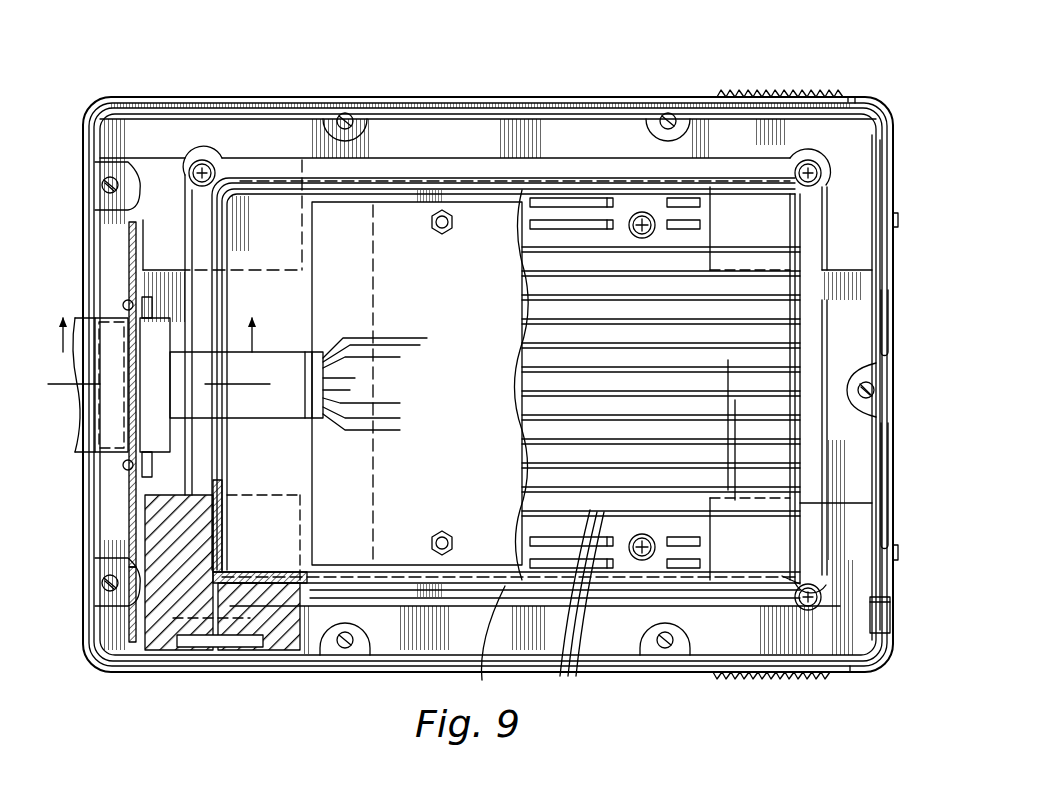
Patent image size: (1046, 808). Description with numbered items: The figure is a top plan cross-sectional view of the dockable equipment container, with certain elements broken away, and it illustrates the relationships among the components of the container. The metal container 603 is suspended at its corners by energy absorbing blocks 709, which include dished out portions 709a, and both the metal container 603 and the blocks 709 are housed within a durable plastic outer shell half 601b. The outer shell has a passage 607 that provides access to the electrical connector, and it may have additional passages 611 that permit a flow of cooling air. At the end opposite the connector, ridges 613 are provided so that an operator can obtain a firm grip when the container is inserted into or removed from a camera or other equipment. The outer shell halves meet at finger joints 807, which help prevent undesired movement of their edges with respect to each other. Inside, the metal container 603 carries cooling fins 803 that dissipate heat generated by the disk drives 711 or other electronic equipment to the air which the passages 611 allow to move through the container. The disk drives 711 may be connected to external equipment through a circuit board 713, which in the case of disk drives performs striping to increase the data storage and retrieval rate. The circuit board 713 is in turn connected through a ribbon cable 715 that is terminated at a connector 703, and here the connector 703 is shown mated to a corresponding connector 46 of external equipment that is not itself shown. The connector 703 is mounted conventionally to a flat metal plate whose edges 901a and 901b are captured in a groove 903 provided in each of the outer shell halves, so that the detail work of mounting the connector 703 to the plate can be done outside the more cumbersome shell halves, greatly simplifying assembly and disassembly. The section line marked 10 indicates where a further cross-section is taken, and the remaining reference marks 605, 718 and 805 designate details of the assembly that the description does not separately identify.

The section line 10- 10 is at (159, 336).
The connector 46 is at (82, 447).
The outer shell half 601b is at (314, 98).
The metal container 603 is at (434, 170).
The screw boss 605 is at (670, 113).
The passage 607 is at (86, 240).
The passage 611 is at (893, 152).
The ridges 613 is at (772, 92).
The connector 703 is at (158, 428).
The energy absorbing blocks 709 is at (246, 122).
The dished out portions 709a is at (238, 628).
The disk drives 711 is at (362, 585).
The circuit board 713 is at (352, 205).
The ribbon cable 715 is at (286, 402).
The screw 718 is at (642, 212).
The cooling fins 803 is at (576, 604).
The wire 805 is at (497, 642).
The finger joints 807 is at (877, 80).
The edge of metal plate 901a is at (133, 228).
The edge of metal plate 901b is at (116, 648).
The groove 903 is at (143, 240).